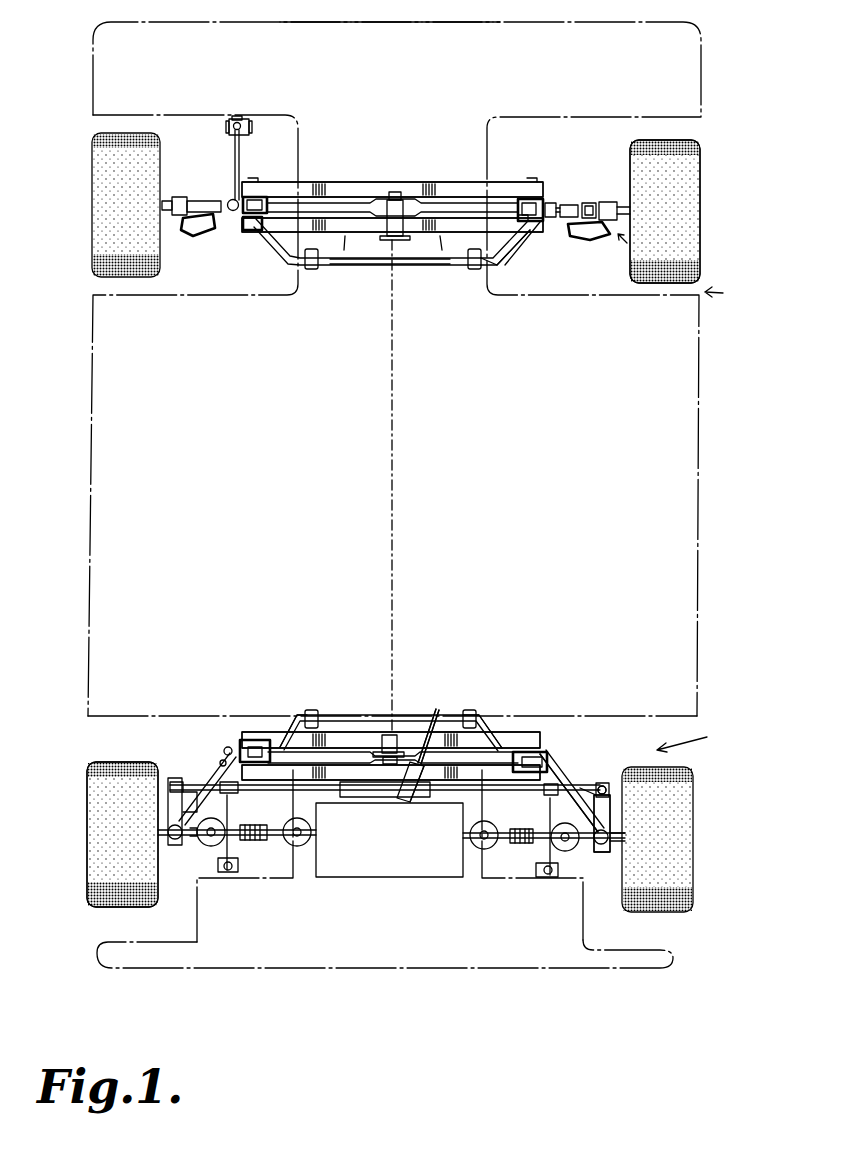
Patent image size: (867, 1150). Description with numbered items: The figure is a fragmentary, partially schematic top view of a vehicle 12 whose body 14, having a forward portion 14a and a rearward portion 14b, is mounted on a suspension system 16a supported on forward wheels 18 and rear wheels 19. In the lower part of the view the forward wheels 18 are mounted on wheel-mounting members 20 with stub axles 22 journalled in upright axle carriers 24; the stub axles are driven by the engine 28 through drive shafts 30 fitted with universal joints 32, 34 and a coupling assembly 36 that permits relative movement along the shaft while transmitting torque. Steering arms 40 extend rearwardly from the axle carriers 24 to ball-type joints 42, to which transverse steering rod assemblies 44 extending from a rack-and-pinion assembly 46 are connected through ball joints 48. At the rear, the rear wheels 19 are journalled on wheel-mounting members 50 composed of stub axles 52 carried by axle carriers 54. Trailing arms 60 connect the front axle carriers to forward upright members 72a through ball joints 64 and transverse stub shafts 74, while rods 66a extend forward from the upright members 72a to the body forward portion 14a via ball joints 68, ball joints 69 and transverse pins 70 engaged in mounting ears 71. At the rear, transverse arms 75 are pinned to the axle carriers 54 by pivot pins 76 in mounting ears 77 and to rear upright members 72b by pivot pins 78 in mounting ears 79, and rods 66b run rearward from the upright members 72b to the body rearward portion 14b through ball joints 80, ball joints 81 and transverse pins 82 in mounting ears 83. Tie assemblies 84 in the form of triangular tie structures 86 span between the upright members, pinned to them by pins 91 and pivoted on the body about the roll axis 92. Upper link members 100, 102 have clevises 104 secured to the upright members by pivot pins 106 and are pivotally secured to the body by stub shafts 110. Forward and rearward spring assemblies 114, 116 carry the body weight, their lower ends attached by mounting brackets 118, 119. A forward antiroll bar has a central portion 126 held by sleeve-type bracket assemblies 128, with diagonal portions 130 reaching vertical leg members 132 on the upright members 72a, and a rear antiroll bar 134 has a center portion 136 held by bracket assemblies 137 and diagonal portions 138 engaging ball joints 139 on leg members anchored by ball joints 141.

The vehicle 12 is at (54, 181).
The body 14 is at (699, 422).
The forward portion 14a is at (600, 950).
The rearward portion 14b is at (372, 24).
The suspension system 16a is at (711, 519).
The forward wheels 18 is at (88, 880).
The rear wheels 19 is at (693, 147).
The wheel-mounting members 20 is at (622, 860).
The stub axles 22 is at (622, 838).
The axle carriers 24 is at (620, 822).
The engine 28 is at (392, 873).
The drive shaft 30 is at (536, 845).
The universal joint 32 is at (476, 850).
The universal joint 34 is at (565, 852).
The coupling assembly 36 is at (522, 845).
The steering arms 40 is at (612, 800).
The ball-type joint 42 is at (606, 783).
The transverse steering rod assemblies 44 is at (590, 792).
The rack-and-pinion assembly 46 is at (433, 800).
The ball joint 48 is at (272, 791).
The wheel-mounting members 50 is at (630, 250).
The stub axles 52 is at (621, 214).
The axle carriers 54 is at (588, 214).
The upper trailing arm 60 is at (224, 750).
The ball joints 64 is at (175, 848).
The rods 66a is at (205, 775).
The rods 66b is at (235, 160).
The ball joints 68 is at (221, 766).
The ball joints 69 is at (227, 876).
The transverse pins 70 is at (240, 868).
The mounting ears 71 is at (232, 875).
The forward upright members 72a is at (245, 740).
The rear upright members 72b is at (246, 214).
The transverse stub shafts 74 is at (228, 750).
The transverse arms 75 is at (571, 206).
The pivot pins 76 is at (612, 208).
The mounting ears 77 is at (596, 212).
The pivot pins 78 is at (542, 221).
The mounting ears 79 is at (553, 205).
The ball joints 80 is at (228, 202).
The ball joints 81 is at (237, 117).
The transverse pins 82 is at (252, 127).
The mounting ears 83 is at (249, 140).
The tie assemblies 84 is at (404, 172).
The triangular tie structures 86 is at (338, 189).
The pins 91 is at (535, 196).
The longitudinal axis 92 is at (395, 396).
The upper link member 100 is at (327, 715).
The upper link member 102 is at (437, 709).
The clevis 104 is at (306, 718).
The pivot pins 106 is at (530, 233).
The stub shafts 110 is at (386, 203).
The forward spring assemblies 114 is at (158, 790).
The rearward spring assemblies 116 is at (190, 234).
The mounting brackets 118 is at (158, 810).
The mounting brackets 119 is at (612, 228).
The central portion 126 is at (412, 714).
The sleeve-type bracket assemblies 128 is at (462, 712).
The diagonal portions 130 is at (490, 715).
The vertical leg members 132 is at (570, 790).
The rear antiroll bar 134 is at (398, 267).
The center portion 136 is at (406, 268).
The sleeve-type bracket assemblies 137 is at (310, 270).
The diagonal portions 138 is at (500, 290).
The ball joints 139 is at (250, 232).
The ball joints 141 is at (252, 223).